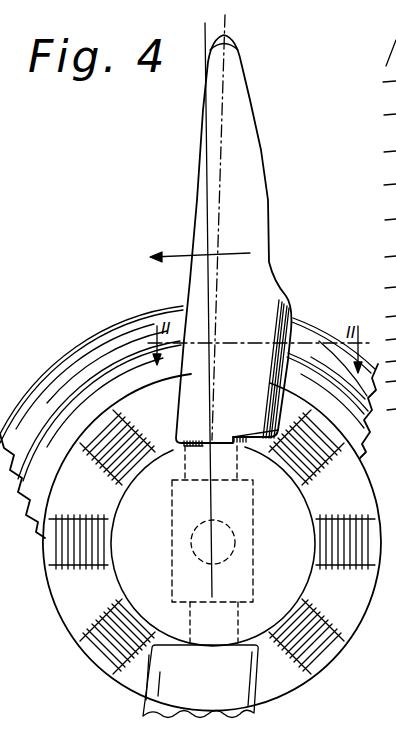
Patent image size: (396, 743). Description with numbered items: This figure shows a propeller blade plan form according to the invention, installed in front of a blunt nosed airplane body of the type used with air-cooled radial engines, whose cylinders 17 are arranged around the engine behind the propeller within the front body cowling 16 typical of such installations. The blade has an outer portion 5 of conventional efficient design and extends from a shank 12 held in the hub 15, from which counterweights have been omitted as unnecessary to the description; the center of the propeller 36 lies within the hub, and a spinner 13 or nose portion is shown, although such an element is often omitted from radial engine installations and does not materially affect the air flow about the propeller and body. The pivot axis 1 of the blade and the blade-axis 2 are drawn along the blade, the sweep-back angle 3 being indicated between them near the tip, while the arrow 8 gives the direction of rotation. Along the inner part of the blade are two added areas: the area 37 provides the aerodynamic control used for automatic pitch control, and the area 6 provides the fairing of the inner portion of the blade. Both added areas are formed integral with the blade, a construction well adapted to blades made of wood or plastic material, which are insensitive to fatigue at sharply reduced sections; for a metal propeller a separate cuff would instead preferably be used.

The pivot axis of the blade 1 is at (206, 32).
The blade-axis 2 is at (226, 70).
The sweep-back angle 3 is at (216, 26).
The outer portion of the blade 5 is at (246, 120).
The added area for fairing 6 is at (265, 408).
The direction of rotation 8 is at (250, 253).
The shank of the blade 12 is at (238, 473).
The spinner 13 is at (307, 578).
The hub 15 is at (253, 520).
The front body cowling 16 is at (50, 378).
The cylinders 17 is at (317, 473).
The center of the propeller 36 is at (193, 543).
The added area for aerodynamic control 37 is at (283, 300).